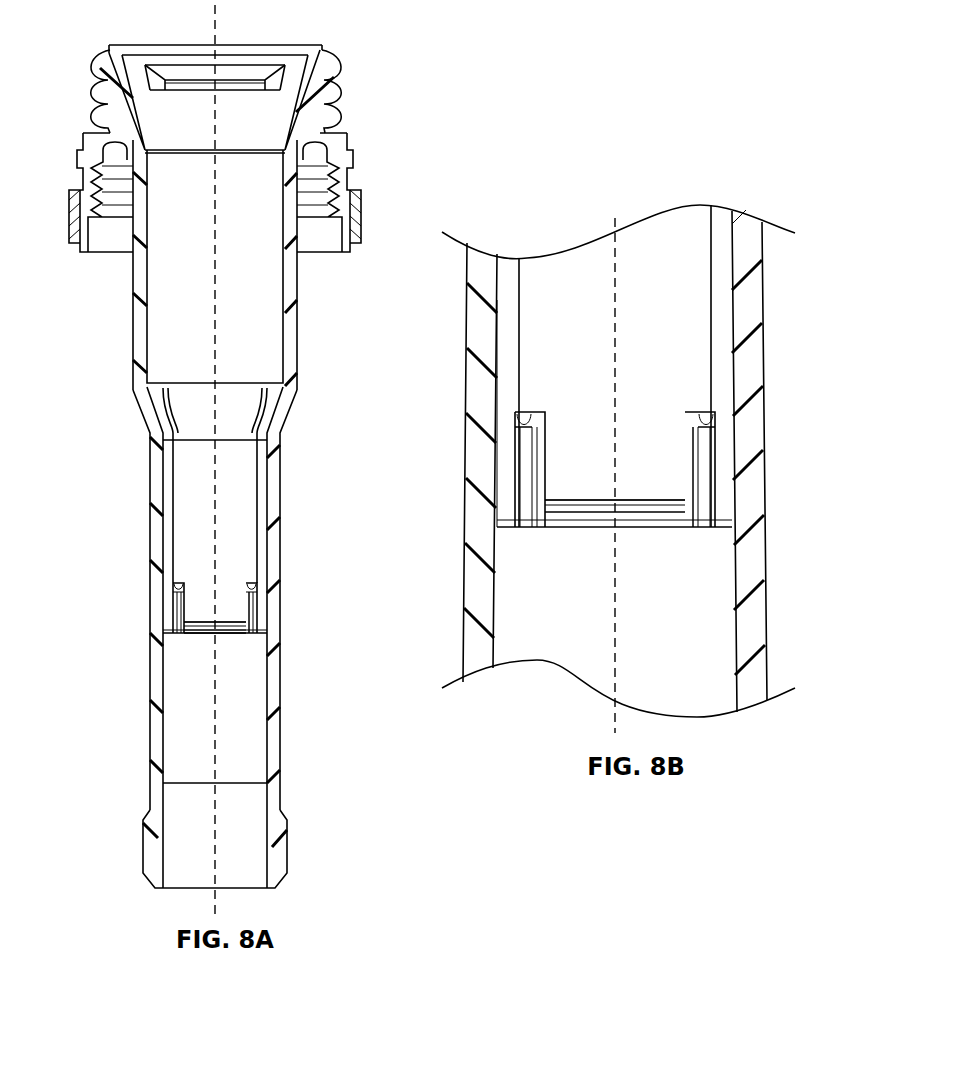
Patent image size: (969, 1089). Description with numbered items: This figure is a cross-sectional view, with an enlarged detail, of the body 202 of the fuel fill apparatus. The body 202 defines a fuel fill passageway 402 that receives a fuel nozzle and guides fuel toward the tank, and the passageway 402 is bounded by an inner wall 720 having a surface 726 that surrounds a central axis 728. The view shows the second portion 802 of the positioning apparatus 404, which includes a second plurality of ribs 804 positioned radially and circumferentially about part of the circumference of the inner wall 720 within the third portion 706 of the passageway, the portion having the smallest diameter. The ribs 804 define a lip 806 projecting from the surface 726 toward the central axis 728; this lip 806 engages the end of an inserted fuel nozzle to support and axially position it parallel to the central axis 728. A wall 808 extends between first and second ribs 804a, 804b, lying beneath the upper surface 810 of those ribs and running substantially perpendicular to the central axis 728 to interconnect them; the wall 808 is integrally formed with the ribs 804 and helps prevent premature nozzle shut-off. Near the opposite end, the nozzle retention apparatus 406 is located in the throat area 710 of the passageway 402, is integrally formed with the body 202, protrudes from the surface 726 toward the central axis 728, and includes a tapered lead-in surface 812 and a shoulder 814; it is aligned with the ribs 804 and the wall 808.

In FIG. 8A, the body 202 is at (386, 62).
In FIG. 8B, the body 202 is at (728, 159).
In FIG. 8A, the fuel fill passageway 402 is at (163, 311).
In FIG. 8B, the fuel fill passageway 402 is at (578, 284).
In FIG. 8A, the positioning apparatus 404 is at (146, 597).
In FIG. 8B, the positioning apparatus 404 is at (505, 364).
In FIG. 8A, the nozzle retention apparatus 406 is at (175, 68).
In FIG. 8A, the third portion 706 is at (283, 728).
In FIG. 8B, the third portion 706 is at (763, 623).
In FIG. 8A, the throat area 710 is at (298, 62).
In FIG. 8A, the inner wall 720 is at (155, 459).
In FIG. 8B, the inner wall 720 is at (497, 280).
In FIG. 8A, the surface 726 is at (290, 97).
In FIG. 8B, the surface 726 is at (677, 278).
In FIG. 8A, the central axis 728 is at (220, 896).
In FIG. 8B, the central axis 728 is at (620, 702).
In FIG. 8A, the second portion 802 is at (153, 638).
In FIG. 8B, the second portion 802 is at (499, 457).
In FIG. 8A, the second plurality of ribs 804 is at (239, 577).
In FIG. 8B, the second plurality of ribs 804 is at (685, 382).
In FIG. 8A, the first rib 804a is at (140, 632).
In FIG. 8B, the first rib 804a is at (525, 517).
In FIG. 8A, the second rib 804b is at (323, 606).
In FIG. 8B, the second rib 804b is at (755, 458).
In FIG. 8A, the lip 806 is at (180, 614).
In FIG. 8B, the lip 806 is at (524, 500).
In FIG. 8A, the wall 808 is at (208, 630).
In FIG. 8B, the wall 808 is at (573, 513).
In FIG. 8A, the upper surface 810 is at (175, 575).
In FIG. 8B, the upper surface 810 is at (709, 405).
In FIG. 8A, the tapered lead-in surface 812 is at (233, 68).
In FIG. 8A, the shoulder 814 is at (185, 90).